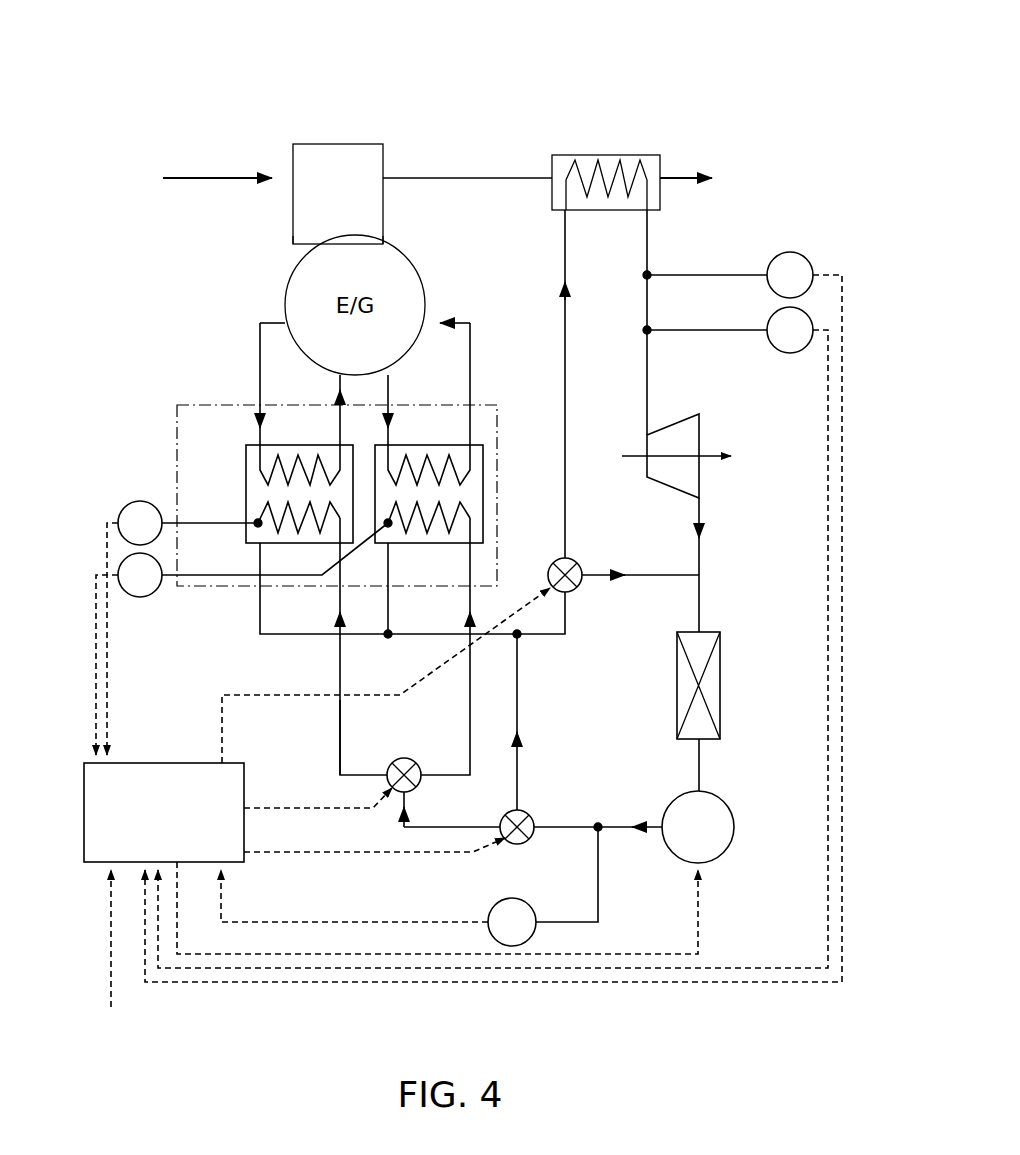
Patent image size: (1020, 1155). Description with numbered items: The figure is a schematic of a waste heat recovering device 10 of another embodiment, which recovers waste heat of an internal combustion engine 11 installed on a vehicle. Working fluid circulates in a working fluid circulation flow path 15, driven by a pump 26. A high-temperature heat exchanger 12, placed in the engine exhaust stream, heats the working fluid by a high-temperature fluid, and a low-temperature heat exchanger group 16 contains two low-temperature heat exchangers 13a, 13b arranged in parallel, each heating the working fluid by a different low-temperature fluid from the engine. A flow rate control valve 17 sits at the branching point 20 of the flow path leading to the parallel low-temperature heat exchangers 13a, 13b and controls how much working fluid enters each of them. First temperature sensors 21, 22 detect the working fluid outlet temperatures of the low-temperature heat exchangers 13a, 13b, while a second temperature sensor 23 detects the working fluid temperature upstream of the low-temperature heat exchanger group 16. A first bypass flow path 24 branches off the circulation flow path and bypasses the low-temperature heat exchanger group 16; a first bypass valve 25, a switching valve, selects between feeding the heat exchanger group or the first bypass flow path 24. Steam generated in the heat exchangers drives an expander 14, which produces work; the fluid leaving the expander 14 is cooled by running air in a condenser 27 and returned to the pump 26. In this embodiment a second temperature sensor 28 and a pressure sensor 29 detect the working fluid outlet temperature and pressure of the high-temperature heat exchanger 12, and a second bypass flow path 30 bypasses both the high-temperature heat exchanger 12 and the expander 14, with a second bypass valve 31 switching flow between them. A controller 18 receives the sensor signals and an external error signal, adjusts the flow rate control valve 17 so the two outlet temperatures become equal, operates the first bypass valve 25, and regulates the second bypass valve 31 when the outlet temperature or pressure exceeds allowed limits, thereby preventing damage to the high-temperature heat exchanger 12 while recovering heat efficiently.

The waste heat recovering device 10 is at (240, 88).
The internal combustion engine 11 is at (338, 144).
The high-temperature heat exchanger 12 is at (585, 155).
The low-temperature heat exchanger 13a is at (246, 498).
The low-temperature heat exchanger 13b is at (483, 495).
The expander 14 is at (672, 424).
The working fluid circulation flow path 15 is at (568, 825).
The low-temperature heat exchanger group 16 is at (177, 440).
The flow rate control valve 17 is at (415, 758).
The controller 18 is at (122, 763).
The branching point 20 is at (378, 744).
The first temperature sensor 21 is at (140, 500).
The first temperature sensor 22 is at (140, 597).
The second temperature sensor 23 is at (490, 905).
The first bypass flow path 24 is at (519, 660).
The first bypass valve 25 is at (507, 815).
The pump 26 is at (730, 802).
The condenser 27 is at (720, 688).
The second temperature sensor 28 is at (795, 252).
The pressure sensor 29 is at (793, 354).
The second bypass flow path 30 is at (665, 577).
The second bypass valve 31 is at (568, 557).